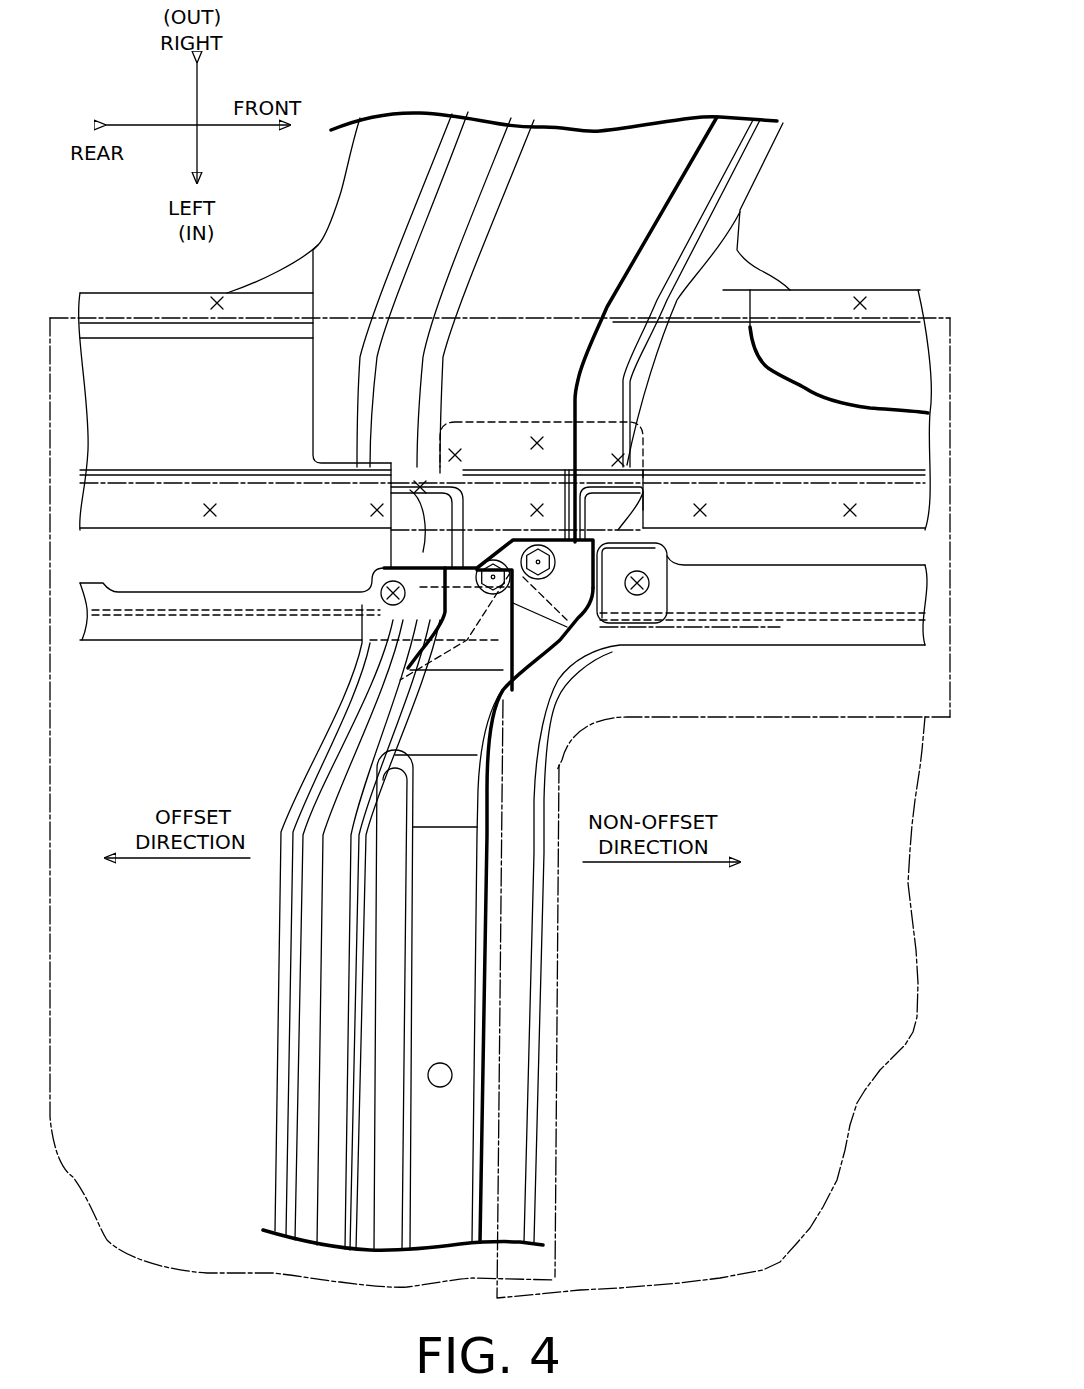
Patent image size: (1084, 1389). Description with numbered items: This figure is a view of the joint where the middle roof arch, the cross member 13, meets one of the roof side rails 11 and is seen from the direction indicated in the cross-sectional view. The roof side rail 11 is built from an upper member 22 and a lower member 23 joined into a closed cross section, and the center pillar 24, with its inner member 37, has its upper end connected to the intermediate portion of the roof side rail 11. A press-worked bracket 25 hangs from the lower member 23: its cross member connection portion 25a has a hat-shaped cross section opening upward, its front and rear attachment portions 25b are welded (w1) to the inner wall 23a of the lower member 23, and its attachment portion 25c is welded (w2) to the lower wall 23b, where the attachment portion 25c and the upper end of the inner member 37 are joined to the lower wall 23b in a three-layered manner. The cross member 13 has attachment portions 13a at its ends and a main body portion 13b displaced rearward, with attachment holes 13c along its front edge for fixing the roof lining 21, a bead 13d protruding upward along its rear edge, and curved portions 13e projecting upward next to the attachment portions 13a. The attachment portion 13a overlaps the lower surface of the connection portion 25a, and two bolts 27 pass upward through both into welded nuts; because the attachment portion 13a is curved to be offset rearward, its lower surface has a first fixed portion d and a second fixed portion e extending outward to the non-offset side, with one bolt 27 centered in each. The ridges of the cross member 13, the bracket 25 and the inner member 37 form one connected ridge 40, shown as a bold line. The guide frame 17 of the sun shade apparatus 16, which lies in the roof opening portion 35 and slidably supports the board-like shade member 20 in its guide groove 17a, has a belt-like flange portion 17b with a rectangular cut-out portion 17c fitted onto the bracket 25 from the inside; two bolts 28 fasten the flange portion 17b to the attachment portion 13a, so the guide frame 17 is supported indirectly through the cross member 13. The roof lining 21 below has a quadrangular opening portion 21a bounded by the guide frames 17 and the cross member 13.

The roof side rail 11 is at (686, 72).
The cross member 13 is at (272, 973).
The attachment portion 13a is at (627, 600).
The main body portion 13b is at (460, 1140).
The attachment hole 13c is at (452, 1073).
The bead 13d is at (377, 1125).
The curved portion 13e is at (467, 800).
The sun shade apparatus 16 is at (807, 553).
The guide frame 17 is at (182, 645).
The guide groove 17a is at (775, 623).
The flange portion 17b is at (847, 572).
The cut-out portion 17c is at (447, 618).
The shade member 20 is at (820, 1220).
The roof lining 21 is at (742, 720).
The opening portion 21a is at (560, 927).
The upper member 22 is at (562, 388).
The lower member 23 is at (703, 360).
The inner wall 23a is at (703, 480).
The lower wall 23b is at (291, 361).
The center pillar 24 is at (767, 174).
The bracket 25 is at (386, 496).
The cross member connection portion 25a is at (540, 613).
The attachment portion 25b is at (425, 528).
The attachment portion 25c is at (607, 440).
The bolt 27 is at (487, 553).
The bolt 28 is at (383, 590).
The roof opening portion 35 is at (277, 532).
The inner member 37 is at (338, 190).
The connected ridge 40 is at (493, 723).
The weld w1 is at (397, 462).
The weld w2 is at (615, 450).
The second fixed portion e is at (531, 540).
The first fixed portion d is at (428, 630).